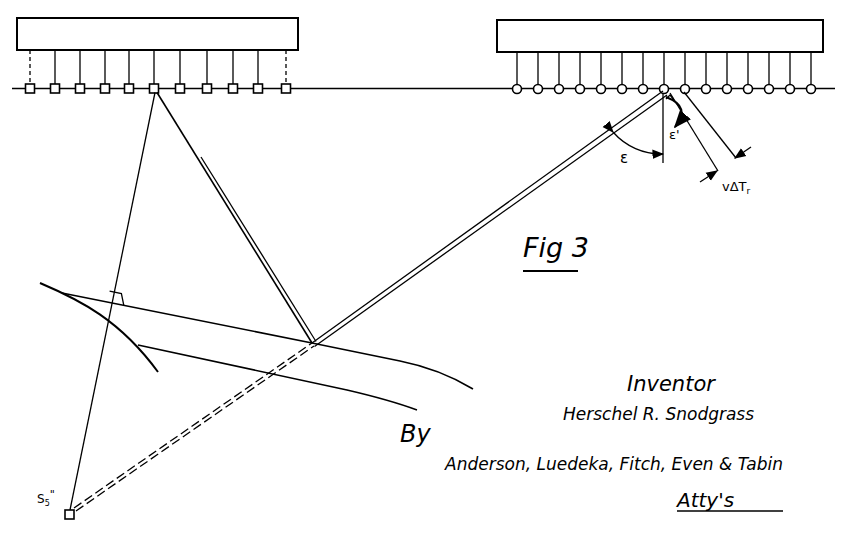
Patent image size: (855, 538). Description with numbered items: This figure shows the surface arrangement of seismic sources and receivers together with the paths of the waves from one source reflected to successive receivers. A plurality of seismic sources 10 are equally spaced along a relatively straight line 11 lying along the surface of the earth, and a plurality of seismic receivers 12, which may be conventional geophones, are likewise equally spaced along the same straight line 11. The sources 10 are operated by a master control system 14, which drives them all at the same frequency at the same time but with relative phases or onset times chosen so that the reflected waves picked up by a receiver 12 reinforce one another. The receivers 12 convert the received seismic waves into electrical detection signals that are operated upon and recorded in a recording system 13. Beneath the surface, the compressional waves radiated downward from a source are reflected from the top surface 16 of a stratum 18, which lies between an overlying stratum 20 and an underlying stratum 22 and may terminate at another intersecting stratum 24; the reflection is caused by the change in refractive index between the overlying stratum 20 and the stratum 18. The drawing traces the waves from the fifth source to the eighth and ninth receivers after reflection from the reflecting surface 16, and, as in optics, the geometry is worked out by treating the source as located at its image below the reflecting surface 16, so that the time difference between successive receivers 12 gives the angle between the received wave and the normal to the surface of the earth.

The seismic sources 10 is at (240, 102).
The straight line 11 is at (383, 88).
The seismic receivers 12 is at (549, 97).
The recording system 13 is at (497, 36).
The master control system 14 is at (298, 28).
The top surface 16 is at (450, 377).
The stratum 18 is at (381, 382).
The overlying stratum 20 is at (420, 342).
The underlying stratum 22 is at (346, 423).
The intersecting stratum 24 is at (61, 335).